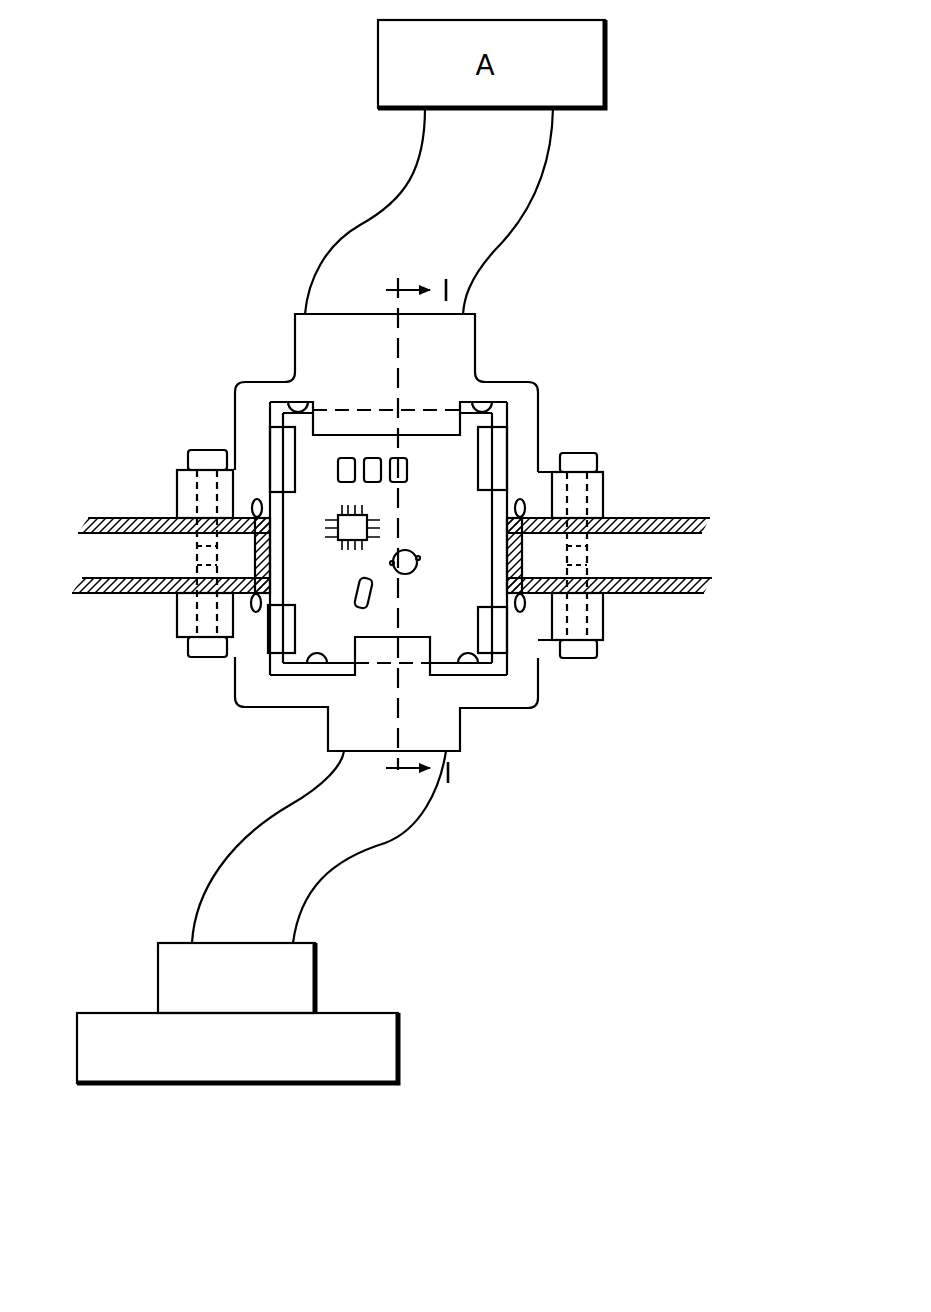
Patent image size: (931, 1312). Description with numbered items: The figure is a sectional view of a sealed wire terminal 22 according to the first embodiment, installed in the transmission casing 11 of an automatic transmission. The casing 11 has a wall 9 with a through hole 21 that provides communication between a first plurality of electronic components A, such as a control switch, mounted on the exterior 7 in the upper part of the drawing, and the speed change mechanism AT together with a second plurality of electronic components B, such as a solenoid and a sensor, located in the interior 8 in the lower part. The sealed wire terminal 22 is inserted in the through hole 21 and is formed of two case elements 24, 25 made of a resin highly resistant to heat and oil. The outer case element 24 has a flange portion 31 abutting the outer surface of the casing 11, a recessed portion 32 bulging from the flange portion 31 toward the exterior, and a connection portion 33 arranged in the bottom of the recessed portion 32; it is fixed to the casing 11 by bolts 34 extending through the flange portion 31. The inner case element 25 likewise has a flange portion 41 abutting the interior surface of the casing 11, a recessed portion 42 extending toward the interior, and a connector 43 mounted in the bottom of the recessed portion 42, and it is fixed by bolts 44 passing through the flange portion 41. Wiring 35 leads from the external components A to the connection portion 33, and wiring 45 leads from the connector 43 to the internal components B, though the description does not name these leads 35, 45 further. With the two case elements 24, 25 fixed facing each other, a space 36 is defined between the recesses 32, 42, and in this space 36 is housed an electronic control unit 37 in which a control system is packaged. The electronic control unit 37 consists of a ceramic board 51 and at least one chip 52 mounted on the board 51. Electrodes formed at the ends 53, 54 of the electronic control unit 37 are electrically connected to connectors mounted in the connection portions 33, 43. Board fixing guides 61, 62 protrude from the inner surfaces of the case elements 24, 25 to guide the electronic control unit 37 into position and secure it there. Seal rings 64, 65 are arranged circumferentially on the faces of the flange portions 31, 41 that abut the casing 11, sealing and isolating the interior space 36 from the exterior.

The exterior 7 is at (149, 472).
The interior 8 is at (92, 871).
The wall 9 is at (92, 517).
The transmission casing 11 is at (370, 472).
The through hole 21 is at (507, 552).
The sealed wire terminal 22 is at (387, 695).
The case element 24 is at (357, 340).
The case element 25 is at (502, 710).
The flange portion 31 is at (177, 483).
The recessed portion 32 is at (248, 423).
The connection portion 33 is at (352, 398).
The bolts 34 is at (203, 450).
The cable to unit A 35 is at (372, 238).
The space 36 is at (271, 665).
The electronic control unit 37 is at (397, 618).
The flange portion 41 is at (597, 625).
The recessed portion 42 is at (533, 682).
The connector 43 is at (398, 672).
The bolts 44 is at (583, 660).
The cable to unit B 45 is at (393, 797).
The ceramic board 51 is at (430, 548).
The chip 52 is at (345, 550).
The end 53 is at (485, 418).
The end 54 is at (340, 652).
The board fixing guide 61 is at (480, 407).
The board fixing guide 62 is at (495, 452).
The seal ring 64 is at (527, 508).
The seal ring 65 is at (527, 603).